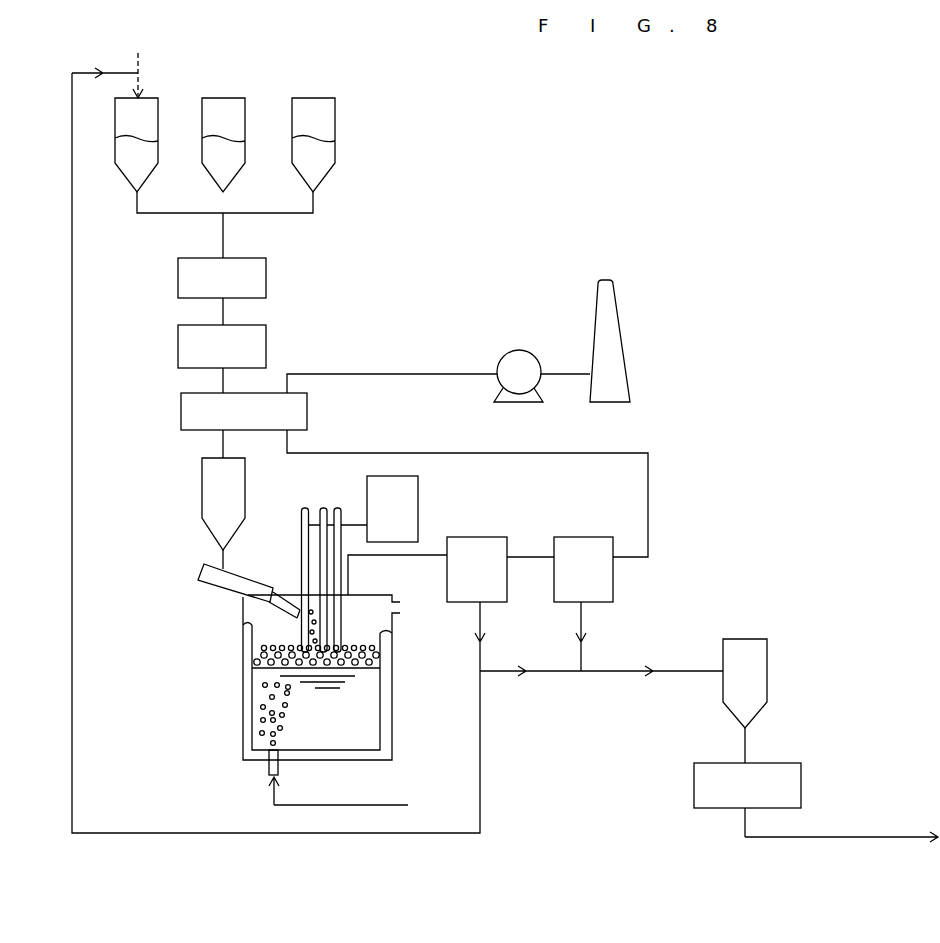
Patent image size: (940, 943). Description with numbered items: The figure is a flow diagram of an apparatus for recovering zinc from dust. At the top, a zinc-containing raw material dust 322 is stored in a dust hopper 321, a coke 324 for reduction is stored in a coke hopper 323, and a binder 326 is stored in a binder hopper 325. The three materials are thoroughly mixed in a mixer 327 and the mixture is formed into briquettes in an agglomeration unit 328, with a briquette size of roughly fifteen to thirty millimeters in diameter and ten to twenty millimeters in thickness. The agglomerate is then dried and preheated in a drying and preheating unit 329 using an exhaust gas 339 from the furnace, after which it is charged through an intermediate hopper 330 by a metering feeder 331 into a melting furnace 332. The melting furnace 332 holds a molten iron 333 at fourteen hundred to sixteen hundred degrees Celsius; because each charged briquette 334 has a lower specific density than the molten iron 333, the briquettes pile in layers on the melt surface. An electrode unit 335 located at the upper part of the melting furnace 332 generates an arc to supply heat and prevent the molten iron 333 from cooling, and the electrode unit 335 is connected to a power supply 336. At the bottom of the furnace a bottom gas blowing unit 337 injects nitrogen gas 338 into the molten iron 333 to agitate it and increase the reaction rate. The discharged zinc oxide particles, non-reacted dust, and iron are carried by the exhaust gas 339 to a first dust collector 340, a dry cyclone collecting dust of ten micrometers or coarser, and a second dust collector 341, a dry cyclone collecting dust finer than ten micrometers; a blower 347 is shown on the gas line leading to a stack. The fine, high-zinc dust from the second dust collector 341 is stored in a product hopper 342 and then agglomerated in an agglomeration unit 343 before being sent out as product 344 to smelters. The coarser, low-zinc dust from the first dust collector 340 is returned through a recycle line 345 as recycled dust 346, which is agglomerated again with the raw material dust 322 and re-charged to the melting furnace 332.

The dust hopper 321 is at (148, 173).
The raw material dust 322 is at (131, 66).
The coke hopper 323 is at (233, 173).
The coke 324 is at (222, 140).
The binder hopper 325 is at (323, 173).
The binder 326 is at (318, 140).
The mixer 327 is at (266, 275).
The agglomeration unit 328 is at (266, 342).
The drying and preheating unit 329 is at (181, 410).
The intermediate hopper 330 is at (202, 485).
The metering feeder 331 is at (204, 567).
The melting furnace 332 is at (392, 718).
The molten iron 333 is at (365, 686).
The briquette 334 is at (350, 648).
The electrode unit 335 is at (305, 508).
The power supply 336 is at (418, 485).
The bottom gas blowing unit 337 is at (269, 771).
The nitrogen gas 338 is at (262, 733).
The exhaust gas 339 is at (428, 555).
The first dust collector 340 is at (492, 593).
The second dust collector 341 is at (613, 590).
The product hopper 342 is at (745, 639).
The agglomeration unit 343 is at (801, 768).
The exhaust outlet 344 is at (841, 825).
The recycle line 345 is at (292, 833).
The recycled dust 346 is at (103, 62).
The blower 347 is at (518, 350).